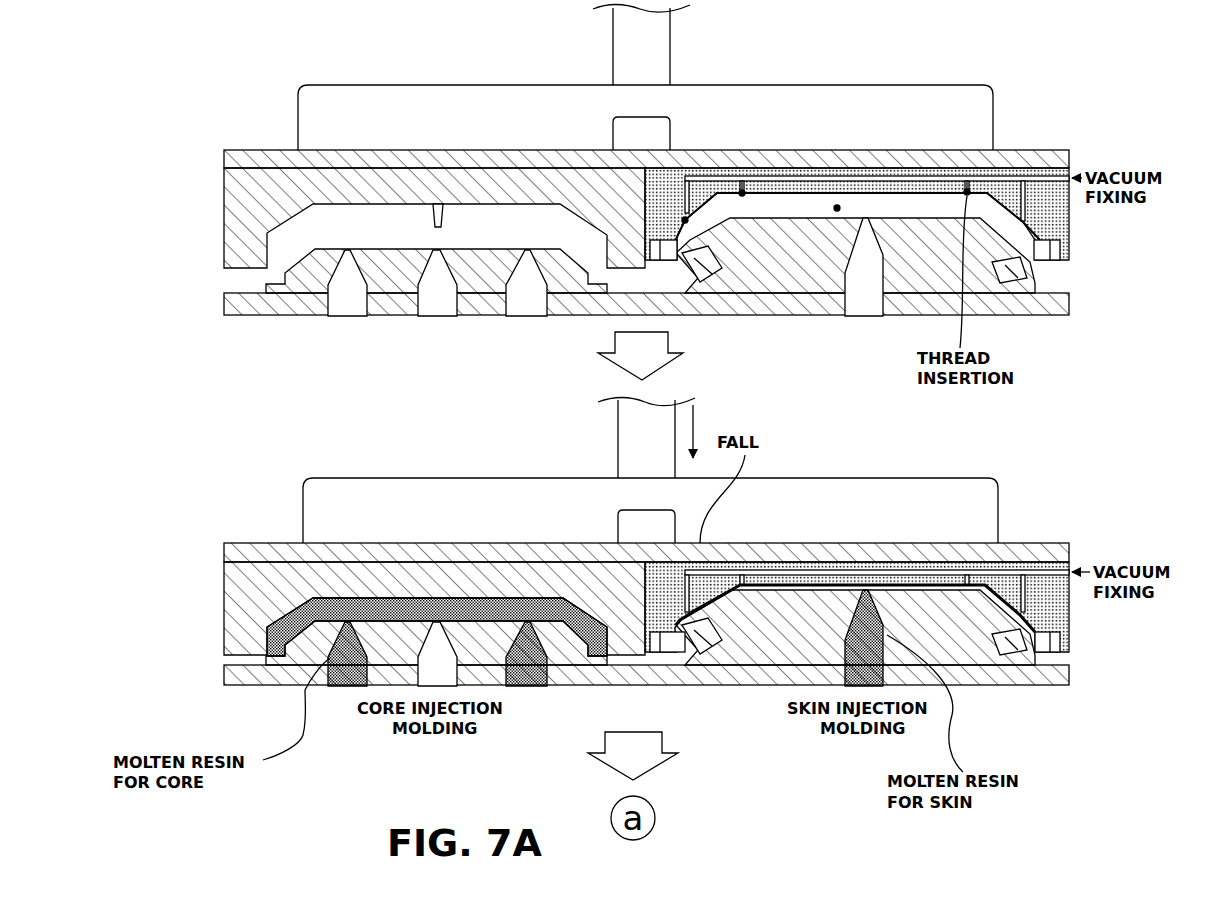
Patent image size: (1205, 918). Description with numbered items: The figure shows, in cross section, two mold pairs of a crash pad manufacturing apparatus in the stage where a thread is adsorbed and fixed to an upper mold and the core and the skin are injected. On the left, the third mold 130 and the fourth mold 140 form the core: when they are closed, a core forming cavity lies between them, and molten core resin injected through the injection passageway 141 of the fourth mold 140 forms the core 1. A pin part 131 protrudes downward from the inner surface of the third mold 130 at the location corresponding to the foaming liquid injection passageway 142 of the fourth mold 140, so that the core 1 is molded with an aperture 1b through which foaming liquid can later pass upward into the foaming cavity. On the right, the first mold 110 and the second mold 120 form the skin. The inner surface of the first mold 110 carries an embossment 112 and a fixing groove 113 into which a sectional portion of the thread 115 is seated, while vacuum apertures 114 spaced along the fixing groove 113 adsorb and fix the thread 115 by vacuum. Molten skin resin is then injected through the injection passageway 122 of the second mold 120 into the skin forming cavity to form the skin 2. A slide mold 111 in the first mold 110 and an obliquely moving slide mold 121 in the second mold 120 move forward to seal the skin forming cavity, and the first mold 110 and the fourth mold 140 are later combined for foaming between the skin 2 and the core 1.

The core 1 is at (357, 603).
The aperture 1b is at (433, 602).
The skin 2 is at (880, 585).
The first mold 110 is at (1078, 240).
The slide mold 111 is at (673, 252).
The embossment 112 is at (782, 190).
The fixing groove 113 is at (847, 200).
The vacuum apertures 114 is at (825, 193).
The thread 115 is at (1000, 200).
The second mold 120 is at (1038, 288).
The slide mold 121 is at (686, 218).
The injection passageway 122 is at (858, 252).
The third mold 130 is at (214, 203).
The pin part 131 is at (437, 222).
The fourth mold 140 is at (297, 248).
The injection passageway 141 is at (340, 265).
The foaming liquid injection passageway 142 is at (428, 265).